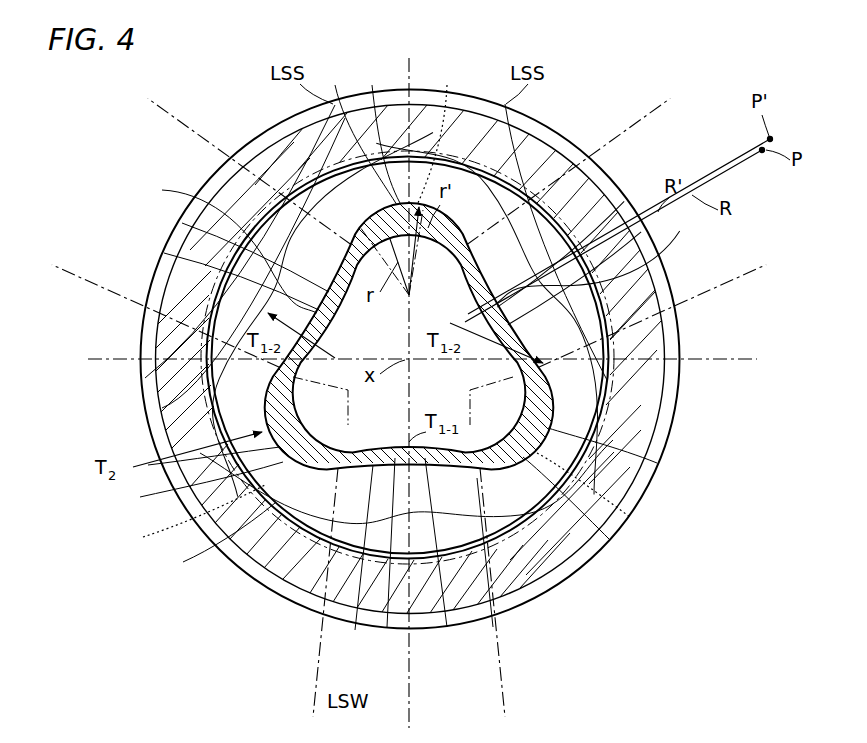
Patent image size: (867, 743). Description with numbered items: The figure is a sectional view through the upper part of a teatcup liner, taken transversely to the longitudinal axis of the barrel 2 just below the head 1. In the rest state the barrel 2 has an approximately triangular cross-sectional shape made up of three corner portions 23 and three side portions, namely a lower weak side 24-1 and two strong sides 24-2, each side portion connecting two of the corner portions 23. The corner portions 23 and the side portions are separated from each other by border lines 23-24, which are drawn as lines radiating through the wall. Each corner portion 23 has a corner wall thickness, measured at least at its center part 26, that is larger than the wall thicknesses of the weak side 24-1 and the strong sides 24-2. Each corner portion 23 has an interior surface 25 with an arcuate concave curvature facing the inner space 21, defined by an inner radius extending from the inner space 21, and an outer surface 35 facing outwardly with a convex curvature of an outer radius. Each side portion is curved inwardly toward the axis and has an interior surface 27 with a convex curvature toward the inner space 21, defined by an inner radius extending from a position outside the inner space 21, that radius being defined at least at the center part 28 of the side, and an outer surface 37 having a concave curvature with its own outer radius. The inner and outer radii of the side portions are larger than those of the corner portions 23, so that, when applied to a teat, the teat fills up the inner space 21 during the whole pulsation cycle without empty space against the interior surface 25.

The head 1 is at (140, 330).
The barrel 2 is at (160, 417).
The inner space 21 is at (398, 336).
The corner portion 23 is at (414, 289).
The weak side 24-1 is at (447, 627).
The strong side 24-2 is at (380, 239).
The border line 23-24 is at (401, 393).
The interior surface 25 is at (405, 342).
The center part 26 is at (408, 307).
The interior surface 27 is at (490, 340).
The center part 28 is at (374, 436).
The outer surface 35 is at (415, 320).
The outer surface 37 is at (423, 417).